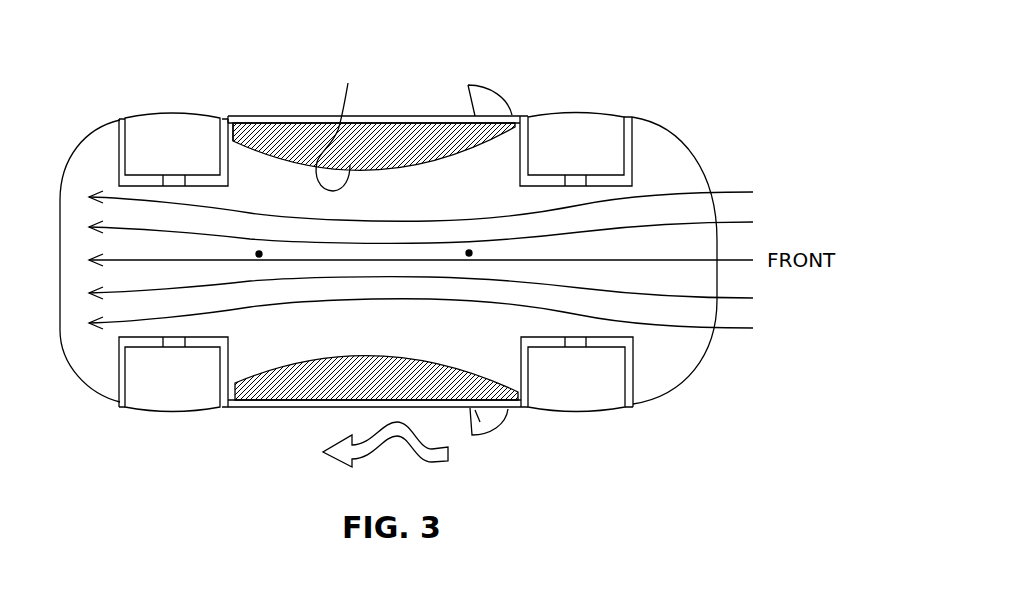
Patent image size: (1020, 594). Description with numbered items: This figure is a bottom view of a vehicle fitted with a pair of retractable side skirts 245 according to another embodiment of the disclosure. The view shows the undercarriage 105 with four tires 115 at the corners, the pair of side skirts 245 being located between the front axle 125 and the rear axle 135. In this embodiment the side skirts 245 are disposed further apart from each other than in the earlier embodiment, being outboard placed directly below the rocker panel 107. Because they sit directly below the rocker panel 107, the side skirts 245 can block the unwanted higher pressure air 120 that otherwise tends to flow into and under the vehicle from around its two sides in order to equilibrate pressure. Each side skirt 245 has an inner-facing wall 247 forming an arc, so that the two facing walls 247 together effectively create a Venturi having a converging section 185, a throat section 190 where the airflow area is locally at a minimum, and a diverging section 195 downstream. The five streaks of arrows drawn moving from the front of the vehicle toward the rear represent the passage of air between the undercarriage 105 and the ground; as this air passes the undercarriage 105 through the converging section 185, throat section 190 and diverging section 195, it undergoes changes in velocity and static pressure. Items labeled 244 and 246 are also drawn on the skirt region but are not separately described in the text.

The undercarriage 105 is at (243, 318).
The rocker panel 107 is at (427, 113).
The tires 115 is at (150, 132).
The higher pressure air 120 is at (406, 444).
The front axle 125 is at (585, 182).
The rear axle 135 is at (163, 182).
The converging section 185 is at (469, 253).
The throat section 190 is at (380, 355).
The diverging section 195 is at (259, 254).
The air deflector 244 is at (490, 131).
The side skirts 245 is at (309, 138).
The deflector edge 246 is at (243, 122).
The inner-facing walls 247 is at (307, 417).